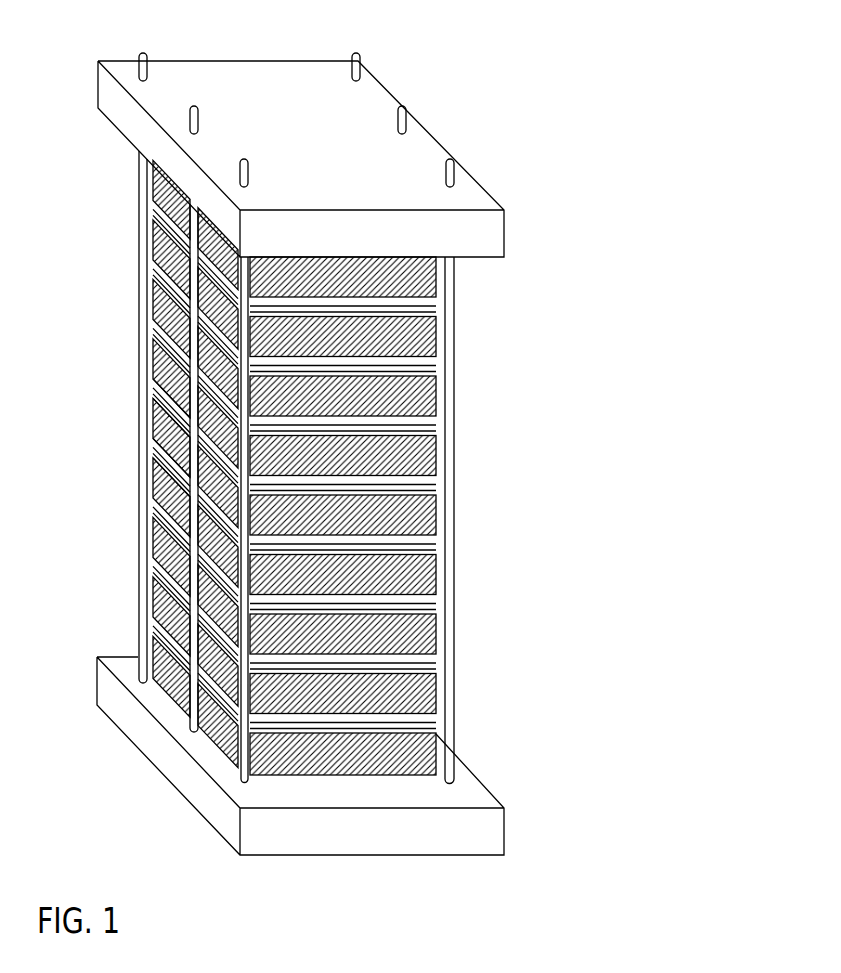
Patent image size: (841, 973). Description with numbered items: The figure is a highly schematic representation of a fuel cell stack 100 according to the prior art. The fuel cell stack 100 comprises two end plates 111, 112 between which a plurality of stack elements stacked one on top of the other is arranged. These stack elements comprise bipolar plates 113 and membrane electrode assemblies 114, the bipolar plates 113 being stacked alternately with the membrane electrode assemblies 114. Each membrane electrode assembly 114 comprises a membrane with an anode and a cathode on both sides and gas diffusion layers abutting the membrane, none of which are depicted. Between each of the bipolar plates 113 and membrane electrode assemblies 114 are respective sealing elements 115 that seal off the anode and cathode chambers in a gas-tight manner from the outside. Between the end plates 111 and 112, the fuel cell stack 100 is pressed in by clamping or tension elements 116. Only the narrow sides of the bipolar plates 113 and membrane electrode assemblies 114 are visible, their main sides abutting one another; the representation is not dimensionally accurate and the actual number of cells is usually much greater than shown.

The fuel cell stack 100 is at (462, 69).
The end plate 111 is at (148, 737).
The end plate 112 is at (248, 78).
The bipolar plate 113 is at (162, 413).
The membrane electrode assembly 114 is at (176, 455).
The sealing element 115 is at (170, 441).
The clamping or tension element 116 is at (141, 243).